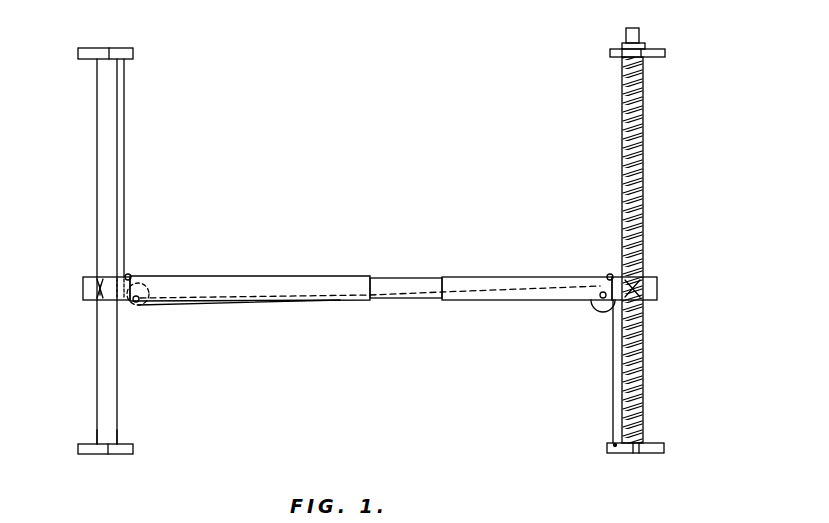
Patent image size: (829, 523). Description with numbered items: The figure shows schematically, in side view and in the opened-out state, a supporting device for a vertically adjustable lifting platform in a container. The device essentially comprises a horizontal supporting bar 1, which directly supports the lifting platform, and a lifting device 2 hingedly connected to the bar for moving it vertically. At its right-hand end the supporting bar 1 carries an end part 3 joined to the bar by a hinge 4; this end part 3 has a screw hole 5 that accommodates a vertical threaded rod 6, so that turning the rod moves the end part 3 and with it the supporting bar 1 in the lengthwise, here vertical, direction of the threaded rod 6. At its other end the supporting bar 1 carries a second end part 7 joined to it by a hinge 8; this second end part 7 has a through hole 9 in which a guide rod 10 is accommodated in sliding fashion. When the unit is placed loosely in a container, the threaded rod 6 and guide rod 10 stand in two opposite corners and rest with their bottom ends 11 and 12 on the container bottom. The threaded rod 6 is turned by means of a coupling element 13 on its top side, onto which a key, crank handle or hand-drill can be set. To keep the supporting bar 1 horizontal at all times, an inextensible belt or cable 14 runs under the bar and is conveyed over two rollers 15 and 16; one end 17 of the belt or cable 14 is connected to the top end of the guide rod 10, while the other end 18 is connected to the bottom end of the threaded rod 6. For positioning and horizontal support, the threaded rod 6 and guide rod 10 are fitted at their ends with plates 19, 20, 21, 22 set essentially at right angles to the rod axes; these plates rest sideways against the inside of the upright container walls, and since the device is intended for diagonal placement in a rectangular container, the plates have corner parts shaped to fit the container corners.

The supporting bar 1 is at (295, 275).
The lifting device 2 is at (652, 245).
The end part 3 is at (655, 290).
The hinge 4 is at (608, 275).
The screw hole 5 is at (638, 298).
The threaded rod 6 is at (643, 160).
The second end part 7 is at (83, 282).
The hinge 8 is at (130, 275).
The through hole 9 is at (103, 303).
The guide rod 10 is at (97, 198).
The bottom end of threaded rod 11 is at (637, 438).
The bottom end of guide rod 12 is at (100, 443).
The coupling element 13 is at (637, 36).
The belt or cable 14 is at (205, 306).
The roller 15 is at (601, 308).
The roller 16 is at (133, 305).
The end of belt or cable 17 is at (124, 78).
The other end of belt or cable 18 is at (615, 445).
The plate 19 is at (665, 53).
The plate 20 is at (654, 448).
The plate 21 is at (88, 55).
The plate 22 is at (88, 454).